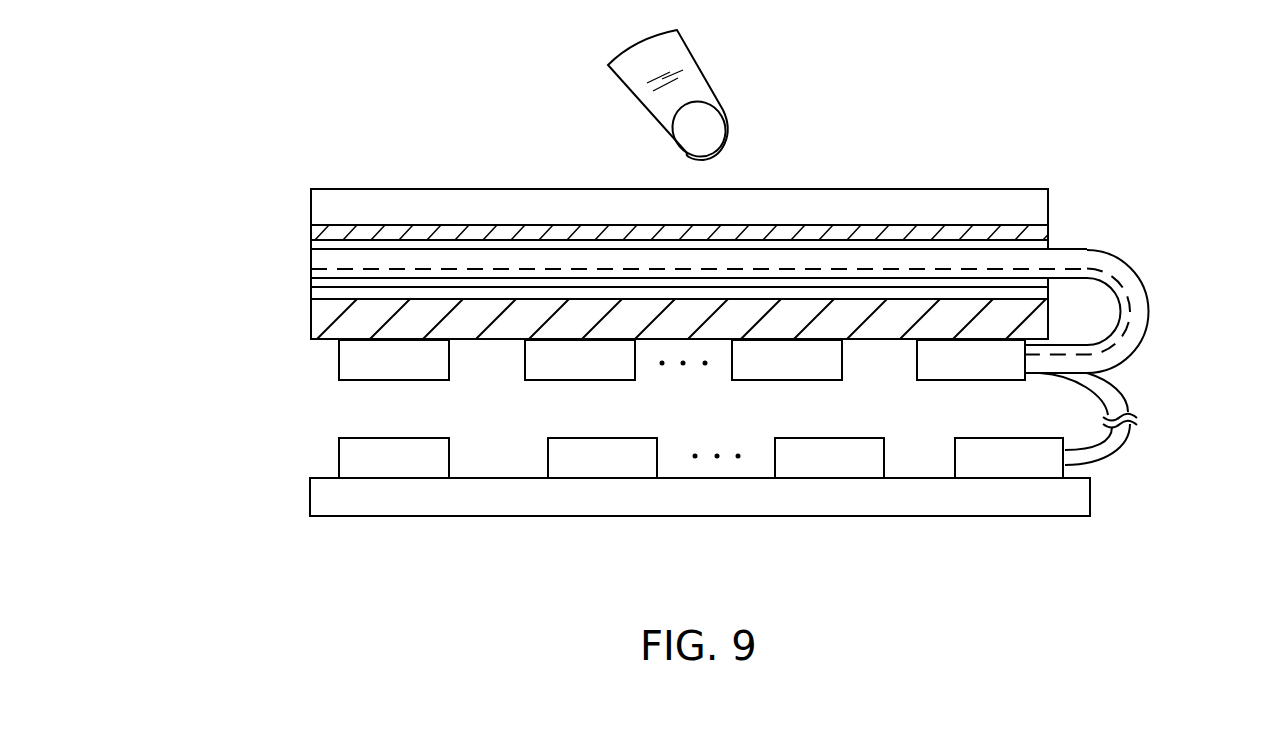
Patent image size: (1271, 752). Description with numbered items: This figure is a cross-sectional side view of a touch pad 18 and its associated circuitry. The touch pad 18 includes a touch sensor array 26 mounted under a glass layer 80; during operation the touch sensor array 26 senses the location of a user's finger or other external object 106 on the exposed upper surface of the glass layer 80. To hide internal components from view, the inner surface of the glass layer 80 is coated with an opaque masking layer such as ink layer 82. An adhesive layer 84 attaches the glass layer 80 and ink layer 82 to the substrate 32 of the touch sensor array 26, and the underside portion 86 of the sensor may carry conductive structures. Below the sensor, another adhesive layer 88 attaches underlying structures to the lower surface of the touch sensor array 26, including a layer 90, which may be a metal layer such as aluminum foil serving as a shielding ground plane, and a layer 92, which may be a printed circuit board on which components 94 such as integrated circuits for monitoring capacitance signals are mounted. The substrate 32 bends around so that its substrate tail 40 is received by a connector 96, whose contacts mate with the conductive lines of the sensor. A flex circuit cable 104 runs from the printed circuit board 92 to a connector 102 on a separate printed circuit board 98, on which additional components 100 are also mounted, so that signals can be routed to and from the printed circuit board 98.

The touch pad 18 is at (1042, 108).
The touch sensor array 26 is at (1172, 293).
The substrate 32 is at (1140, 310).
The substrate tail 40 is at (1147, 276).
The glass layer 80 is at (1040, 203).
The ink layer 82 is at (1040, 230).
The adhesive layer 84 is at (1040, 244).
The underside portion 86 is at (312, 270).
The adhesive layer 88 is at (312, 280).
The layer 90 is at (315, 295).
The printed circuit board 92 is at (327, 323).
The components 94 is at (363, 380).
The connector 96 is at (987, 380).
The printed circuit board 98 is at (701, 505).
The additional components 100 is at (422, 438).
The connector 102 is at (978, 438).
The flex circuit cable 104 is at (1118, 400).
The object 106 is at (698, 72).